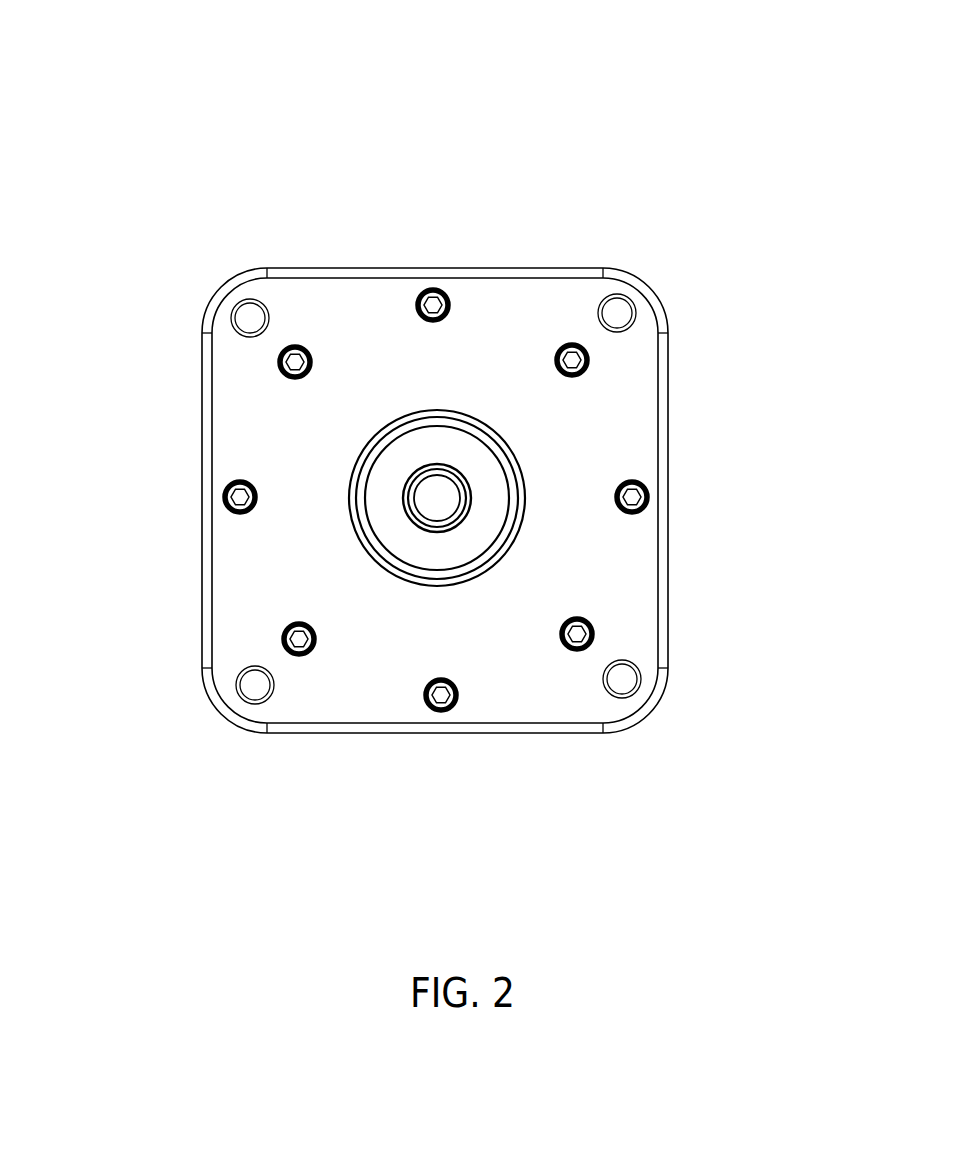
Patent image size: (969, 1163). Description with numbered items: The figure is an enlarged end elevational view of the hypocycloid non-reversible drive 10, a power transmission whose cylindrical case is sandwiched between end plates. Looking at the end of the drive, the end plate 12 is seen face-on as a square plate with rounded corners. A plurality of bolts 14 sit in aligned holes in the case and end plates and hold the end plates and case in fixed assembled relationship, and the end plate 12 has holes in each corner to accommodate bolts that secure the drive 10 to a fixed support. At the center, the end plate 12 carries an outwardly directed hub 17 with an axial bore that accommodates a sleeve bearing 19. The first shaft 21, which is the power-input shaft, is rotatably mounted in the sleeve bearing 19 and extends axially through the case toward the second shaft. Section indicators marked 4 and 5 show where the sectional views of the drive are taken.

The hypocycloid non-reversible drive 10 is at (443, 517).
The end plate 12 is at (606, 422).
The bolts 14 is at (728, 746).
The hub 17 is at (384, 484).
The sleeve bearing 19 is at (264, 743).
The first shaft 21 is at (442, 498).
The section line 4- 4 is at (432, 180).
The section line 5- 5 is at (180, 504).